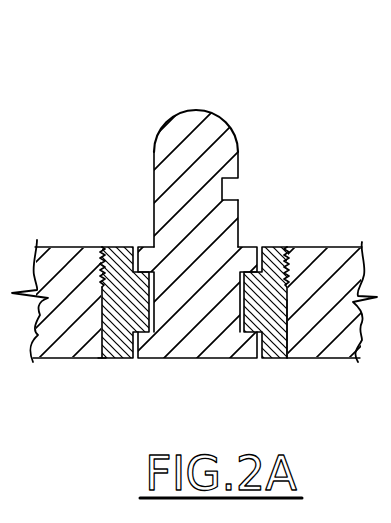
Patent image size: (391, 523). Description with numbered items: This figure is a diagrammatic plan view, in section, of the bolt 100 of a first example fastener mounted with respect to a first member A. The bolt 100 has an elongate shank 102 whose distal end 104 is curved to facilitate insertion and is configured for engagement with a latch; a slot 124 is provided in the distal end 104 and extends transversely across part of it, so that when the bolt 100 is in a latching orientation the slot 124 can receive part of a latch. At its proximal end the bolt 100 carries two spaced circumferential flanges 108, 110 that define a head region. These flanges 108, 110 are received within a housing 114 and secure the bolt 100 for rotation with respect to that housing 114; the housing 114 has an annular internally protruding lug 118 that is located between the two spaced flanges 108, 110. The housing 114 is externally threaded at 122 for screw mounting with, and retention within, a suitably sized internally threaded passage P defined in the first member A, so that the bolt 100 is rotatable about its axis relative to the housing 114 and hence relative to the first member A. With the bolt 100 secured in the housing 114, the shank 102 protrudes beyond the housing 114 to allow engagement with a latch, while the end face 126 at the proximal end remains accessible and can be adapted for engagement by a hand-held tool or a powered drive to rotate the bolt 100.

The bolt 100 is at (212, 235).
The shank 102 is at (163, 187).
The distal end 104 is at (208, 110).
The circumferential flange 108 is at (150, 246).
The circumferential flange 110 is at (96, 309).
The housing 114 is at (313, 309).
The annular internally protruding lug 118 is at (287, 305).
The external thread 122 is at (300, 247).
The slot 124 is at (236, 189).
The end face 126 is at (212, 358).
The first member A is at (88, 310).
The internally threaded passage P is at (102, 362).